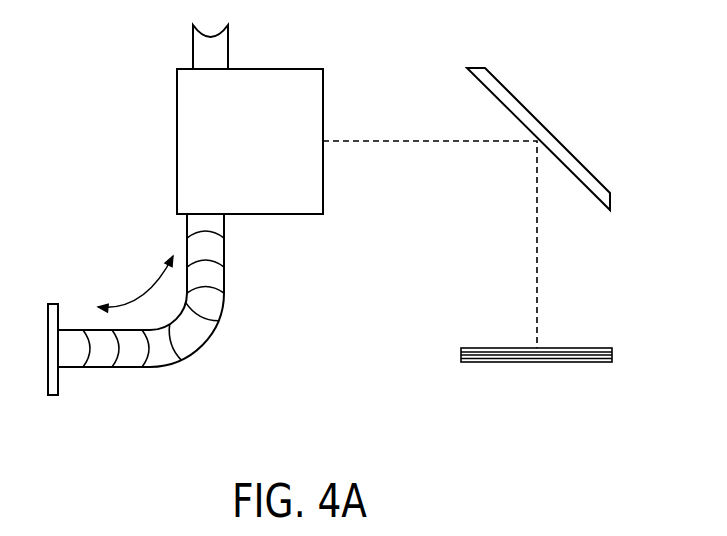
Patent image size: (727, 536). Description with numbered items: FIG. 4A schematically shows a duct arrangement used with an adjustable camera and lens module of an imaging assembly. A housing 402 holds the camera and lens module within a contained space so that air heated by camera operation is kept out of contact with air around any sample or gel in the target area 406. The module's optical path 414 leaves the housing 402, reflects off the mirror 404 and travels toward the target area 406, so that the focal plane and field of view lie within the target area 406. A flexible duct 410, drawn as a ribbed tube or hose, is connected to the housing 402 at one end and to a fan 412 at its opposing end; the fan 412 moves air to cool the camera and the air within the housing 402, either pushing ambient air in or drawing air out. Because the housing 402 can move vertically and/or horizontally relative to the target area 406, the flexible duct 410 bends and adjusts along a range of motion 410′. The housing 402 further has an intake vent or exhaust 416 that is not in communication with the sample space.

The housing 402 is at (262, 68).
The mirror 404 is at (545, 132).
The target area 406 is at (613, 353).
The flexible duct 410 is at (210, 332).
The range of motion 410′ is at (147, 293).
The fan 412 is at (55, 395).
The optical path 414 is at (414, 139).
The intake vent or exhaust 416 is at (193, 50).